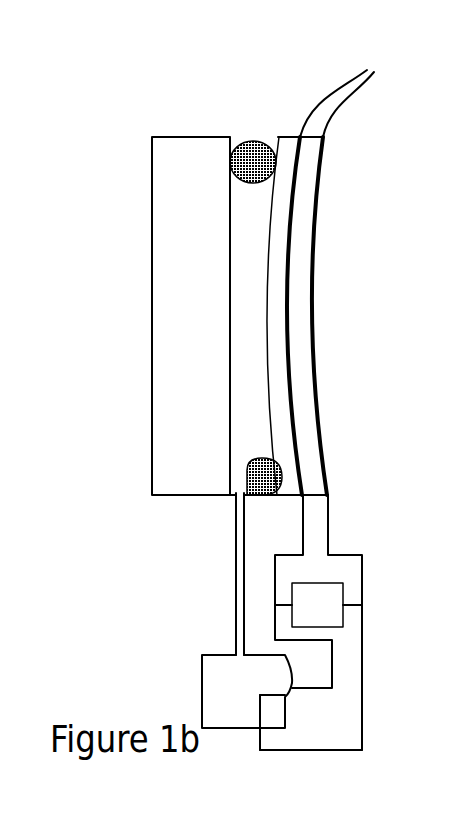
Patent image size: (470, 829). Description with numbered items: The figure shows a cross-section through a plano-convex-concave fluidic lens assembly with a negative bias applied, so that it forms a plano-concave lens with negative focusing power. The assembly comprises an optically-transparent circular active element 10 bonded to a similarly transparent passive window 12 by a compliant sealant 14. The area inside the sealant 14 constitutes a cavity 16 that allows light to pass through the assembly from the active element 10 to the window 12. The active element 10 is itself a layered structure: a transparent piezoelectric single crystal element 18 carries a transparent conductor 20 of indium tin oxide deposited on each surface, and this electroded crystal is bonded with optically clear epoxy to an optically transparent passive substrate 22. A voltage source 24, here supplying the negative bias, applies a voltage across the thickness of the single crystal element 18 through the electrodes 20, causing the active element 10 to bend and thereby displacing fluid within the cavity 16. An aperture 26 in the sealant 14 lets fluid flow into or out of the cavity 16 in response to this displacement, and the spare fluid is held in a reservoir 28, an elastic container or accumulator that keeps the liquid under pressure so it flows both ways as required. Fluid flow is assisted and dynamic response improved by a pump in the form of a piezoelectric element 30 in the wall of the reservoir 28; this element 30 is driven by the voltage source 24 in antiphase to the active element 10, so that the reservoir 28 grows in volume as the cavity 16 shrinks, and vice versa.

The active element 10 is at (302, 253).
The window 12 is at (185, 170).
The compliant sealant 14 is at (247, 140).
The cavity 16 is at (248, 263).
The transparent piezoelectric single crystal element 18 is at (298, 310).
The transparent conductor 20 is at (345, 267).
The passive substrate 22 is at (290, 142).
The voltage source 24 is at (328, 580).
The aperture 26 is at (238, 478).
The reservoir 28 is at (225, 678).
The piezoelectric element 30 is at (290, 705).